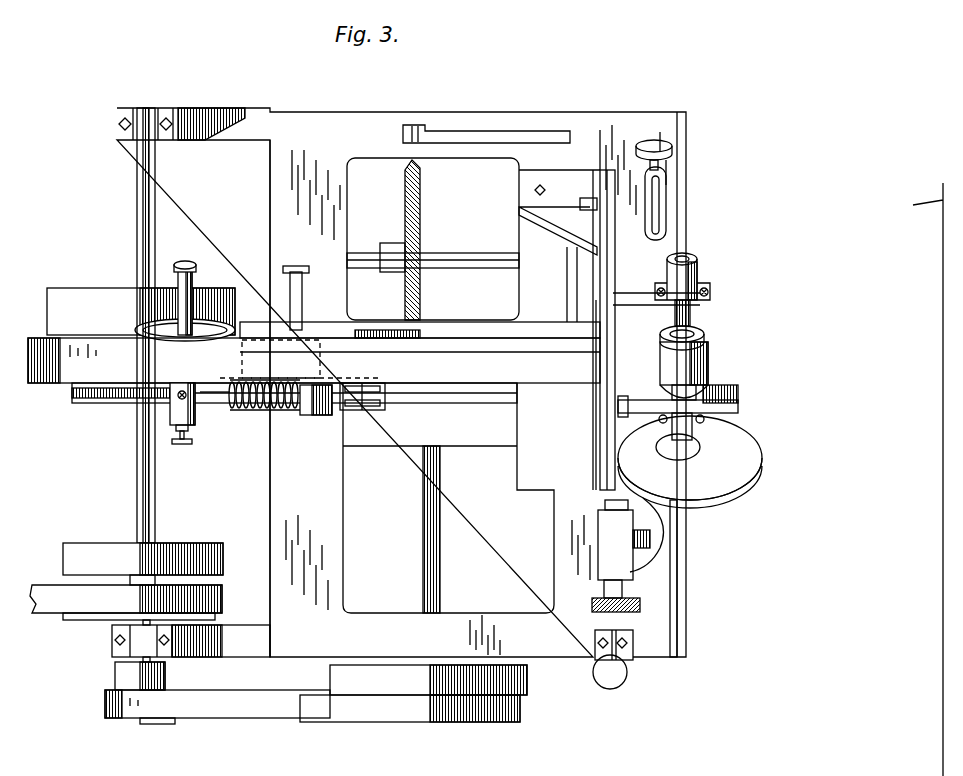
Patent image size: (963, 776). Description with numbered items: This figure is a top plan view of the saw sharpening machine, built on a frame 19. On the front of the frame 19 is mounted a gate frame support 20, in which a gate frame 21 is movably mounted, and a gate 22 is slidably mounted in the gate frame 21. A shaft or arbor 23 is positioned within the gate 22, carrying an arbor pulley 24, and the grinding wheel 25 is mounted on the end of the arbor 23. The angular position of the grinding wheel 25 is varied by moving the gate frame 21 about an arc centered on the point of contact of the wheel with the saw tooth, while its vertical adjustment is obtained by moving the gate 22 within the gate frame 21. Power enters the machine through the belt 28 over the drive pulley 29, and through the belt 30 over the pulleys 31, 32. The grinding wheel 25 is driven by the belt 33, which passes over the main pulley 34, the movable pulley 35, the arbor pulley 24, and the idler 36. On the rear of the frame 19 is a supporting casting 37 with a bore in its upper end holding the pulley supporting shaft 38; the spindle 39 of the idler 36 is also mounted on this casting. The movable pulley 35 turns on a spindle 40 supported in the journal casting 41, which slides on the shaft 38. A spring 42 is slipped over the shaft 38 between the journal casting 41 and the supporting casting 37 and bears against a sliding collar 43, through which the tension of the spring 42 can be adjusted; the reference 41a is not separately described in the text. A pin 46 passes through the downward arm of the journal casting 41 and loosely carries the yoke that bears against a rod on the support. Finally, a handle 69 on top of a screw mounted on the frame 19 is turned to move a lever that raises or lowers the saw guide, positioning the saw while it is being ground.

The frame 19 is at (358, 625).
The gate frame support 20 is at (600, 178).
The gate frame 21 is at (598, 368).
The gate 22 is at (614, 368).
The shaft or arbor 23 is at (700, 312).
The arbor pulley 24 is at (706, 338).
The grinding wheel 25 is at (740, 450).
The belt 28 is at (40, 595).
The drive pulley 29 is at (86, 614).
The belt 30 is at (256, 705).
The pulley 31 is at (140, 722).
The pulley 32 is at (414, 722).
The belt 33 is at (470, 356).
The main pulley 34 is at (78, 335).
The movable pulley 35 is at (219, 335).
The idler 36 is at (310, 322).
The supporting casting 37 is at (372, 410).
The pulley supporting shaft 38 is at (108, 386).
The spindle 39 is at (292, 283).
The spindle 40 is at (194, 290).
The journal casting 41 is at (208, 408).
The rail 41a is at (180, 400).
The spring 42 is at (256, 410).
The sliding collar 43 is at (318, 415).
The pin 46 is at (176, 430).
The handle 69 is at (618, 678).